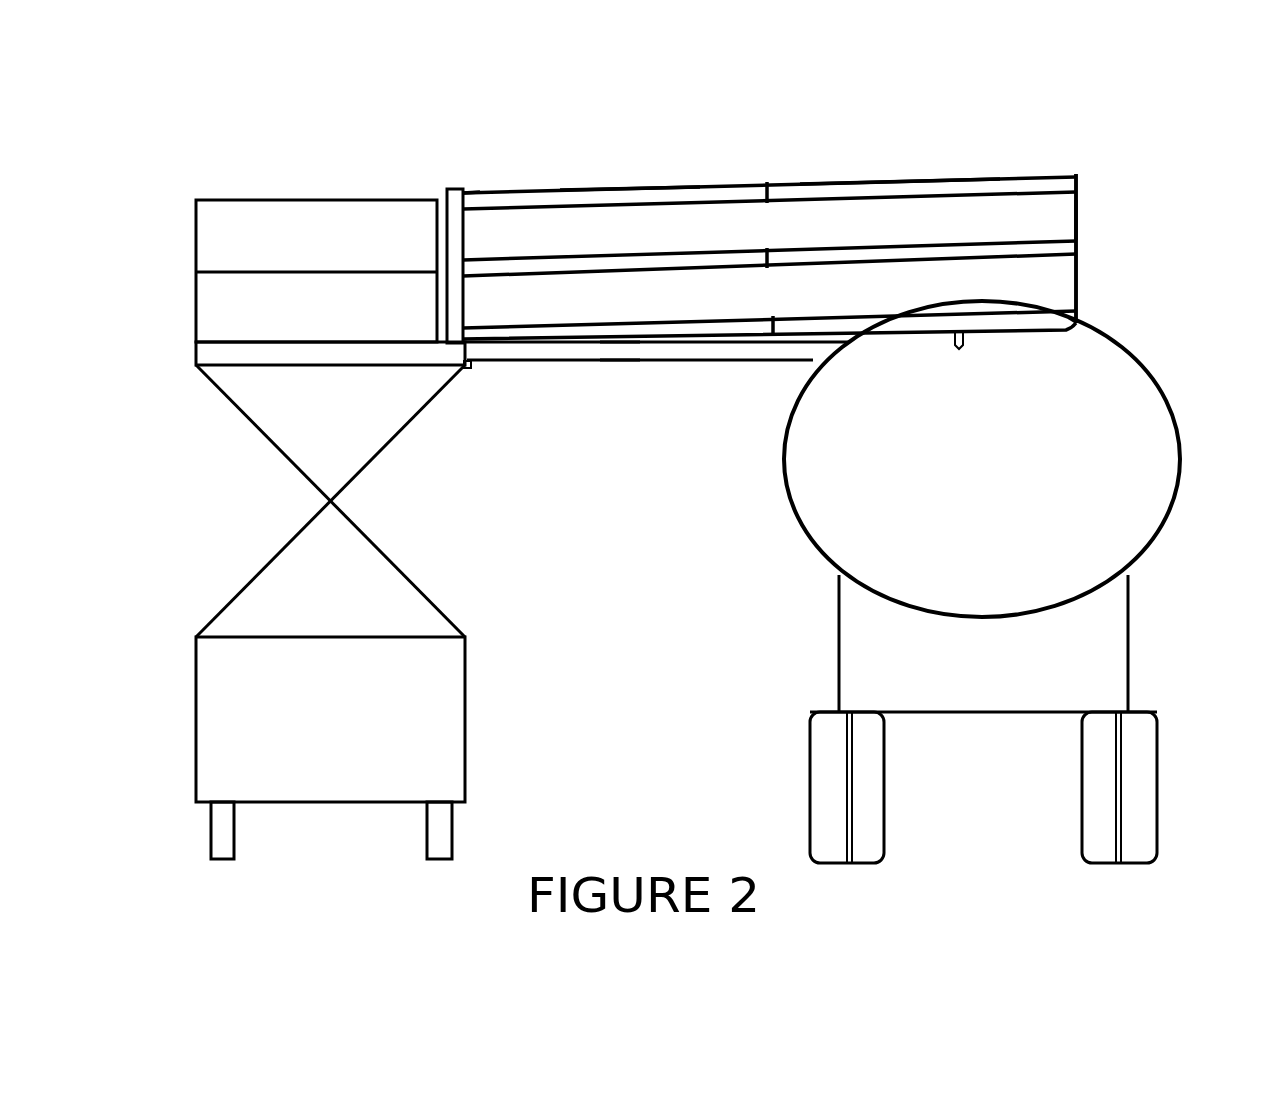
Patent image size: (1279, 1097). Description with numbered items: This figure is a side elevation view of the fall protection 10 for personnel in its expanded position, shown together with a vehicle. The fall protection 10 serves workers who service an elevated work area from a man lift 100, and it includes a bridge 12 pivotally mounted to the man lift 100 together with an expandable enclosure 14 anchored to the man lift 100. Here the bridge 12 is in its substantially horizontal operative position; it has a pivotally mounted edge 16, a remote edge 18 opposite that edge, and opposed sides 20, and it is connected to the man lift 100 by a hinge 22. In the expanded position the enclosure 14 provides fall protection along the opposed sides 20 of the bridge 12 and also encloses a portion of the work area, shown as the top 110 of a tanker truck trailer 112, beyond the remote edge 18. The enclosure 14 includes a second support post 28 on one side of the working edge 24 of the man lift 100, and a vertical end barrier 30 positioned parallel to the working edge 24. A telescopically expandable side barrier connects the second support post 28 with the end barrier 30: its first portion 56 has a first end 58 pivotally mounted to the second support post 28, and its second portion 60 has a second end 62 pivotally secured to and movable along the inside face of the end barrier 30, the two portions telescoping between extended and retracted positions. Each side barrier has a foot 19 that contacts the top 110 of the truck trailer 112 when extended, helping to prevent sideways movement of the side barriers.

The fall protection 10 is at (1007, 147).
The bridge 12 is at (612, 345).
The expandable enclosure 14 is at (752, 183).
The pivotally mounted edge 16 is at (487, 345).
The remote edge 18 is at (800, 345).
The foot 19 is at (1076, 323).
The opposed sides 20 is at (669, 345).
The hinge 22 is at (472, 368).
The working edge 24 is at (447, 343).
The second support post 28 is at (462, 188).
The end barrier 30 is at (1076, 220).
The first portion 56 is at (586, 183).
The first end 58 is at (466, 188).
The second portion 60 is at (917, 180).
The second end 62 is at (1073, 174).
The man lift 100 is at (498, 653).
The top 110 is at (1088, 324).
The tanker truck trailer 112 is at (1140, 595).